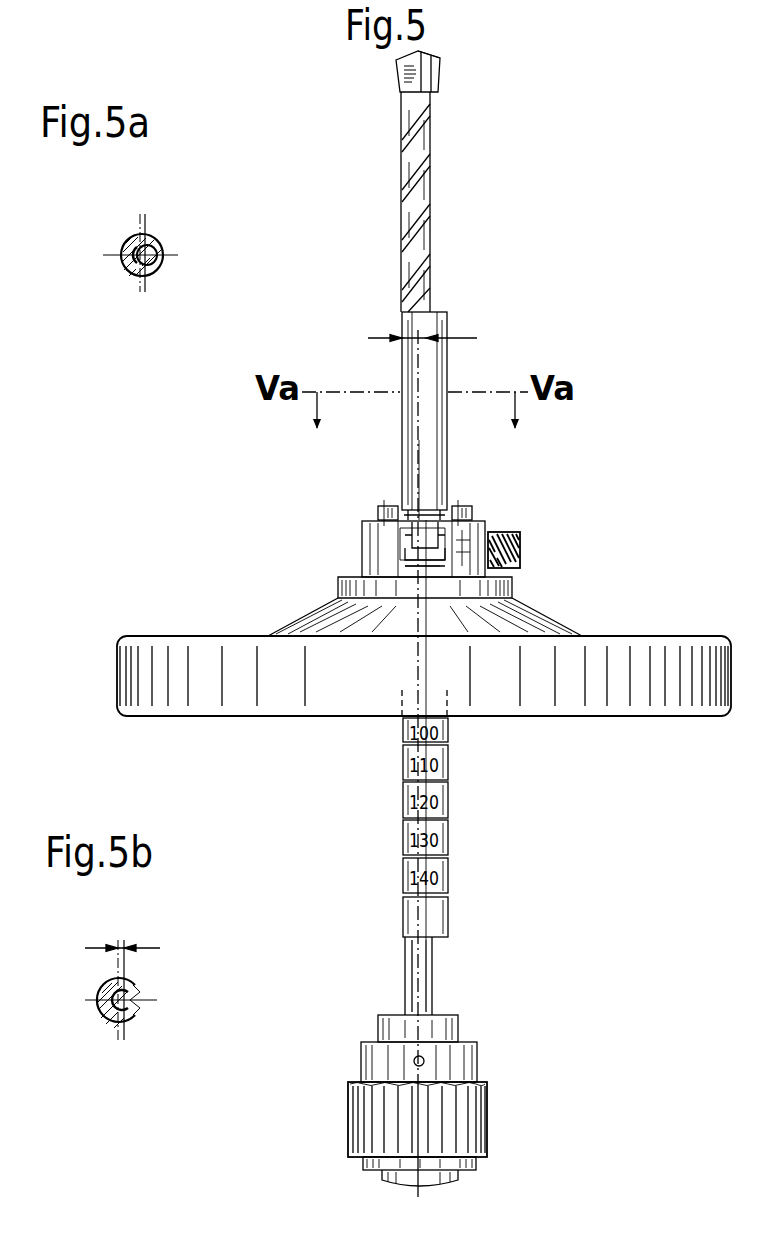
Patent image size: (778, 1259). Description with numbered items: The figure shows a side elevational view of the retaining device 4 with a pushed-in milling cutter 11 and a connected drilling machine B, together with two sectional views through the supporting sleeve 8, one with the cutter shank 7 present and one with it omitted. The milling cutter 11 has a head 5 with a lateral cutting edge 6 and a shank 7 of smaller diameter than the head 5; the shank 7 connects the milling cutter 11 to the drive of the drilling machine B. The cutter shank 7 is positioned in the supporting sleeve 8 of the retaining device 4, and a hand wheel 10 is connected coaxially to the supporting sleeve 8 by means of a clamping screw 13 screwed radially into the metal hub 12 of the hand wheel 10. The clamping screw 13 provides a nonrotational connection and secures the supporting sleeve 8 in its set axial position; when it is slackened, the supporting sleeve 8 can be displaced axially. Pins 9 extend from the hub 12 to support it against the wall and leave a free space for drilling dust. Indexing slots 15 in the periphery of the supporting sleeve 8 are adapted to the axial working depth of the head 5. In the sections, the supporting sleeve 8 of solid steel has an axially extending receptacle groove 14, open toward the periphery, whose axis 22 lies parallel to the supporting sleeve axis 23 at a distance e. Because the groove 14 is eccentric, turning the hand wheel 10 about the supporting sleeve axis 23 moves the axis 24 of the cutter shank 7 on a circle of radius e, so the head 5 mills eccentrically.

In FIG. 5, the retaining device 4 is at (556, 607).
In FIG. 5, the head of the milling cutter 5 is at (403, 76).
In FIG. 5, the lateral cutting edge 6 is at (438, 78).
In FIG. 5, the shank of the milling cutter 7 is at (418, 184).
In FIG. 5A, the shank of the milling cutter 7 is at (153, 246).
In FIG. 5, the supporting sleeve 8 is at (442, 445).
In FIG. 5A, the supporting sleeve 8 is at (124, 268).
In FIG. 5, the pins 9 is at (378, 512).
In FIG. 5, the hand wheel 10 is at (675, 697).
In FIG. 5, the milling cutter 11 is at (388, 278).
In FIG. 5, the hub 12 is at (488, 527).
In FIG. 5, the clamping screw 13 is at (520, 540).
In FIG. 5, the receptacle groove 14 is at (398, 533).
In FIG. 5A, the receptacle groove 14 is at (155, 275).
In FIG. 5B, the receptacle groove 14 is at (133, 995).
In FIG. 5, the indexing slots 15 is at (438, 556).
In FIG. 5B, the axis of the receptacle groove 22 is at (130, 1002).
In FIG. 5, the supporting sleeve axis 23 is at (425, 362).
In FIG. 5A, the supporting sleeve axis 23 is at (138, 218).
In FIG. 5B, the supporting sleeve axis 23 is at (118, 1030).
In FIG. 5, the axis of the cutter shank 24 is at (415, 475).
In FIG. 5A, the axis of the cutter shank 24 is at (146, 246).
In FIG. 5B, the axis of the cutter shank 24 is at (128, 945).
In FIG. 5, the drilling machine B is at (477, 1112).
In FIG. 5, the distance between groove axis and supporting sleeve axis e is at (415, 337).
In FIG. 5B, the distance between groove axis and supporting sleeve axis e is at (119, 945).